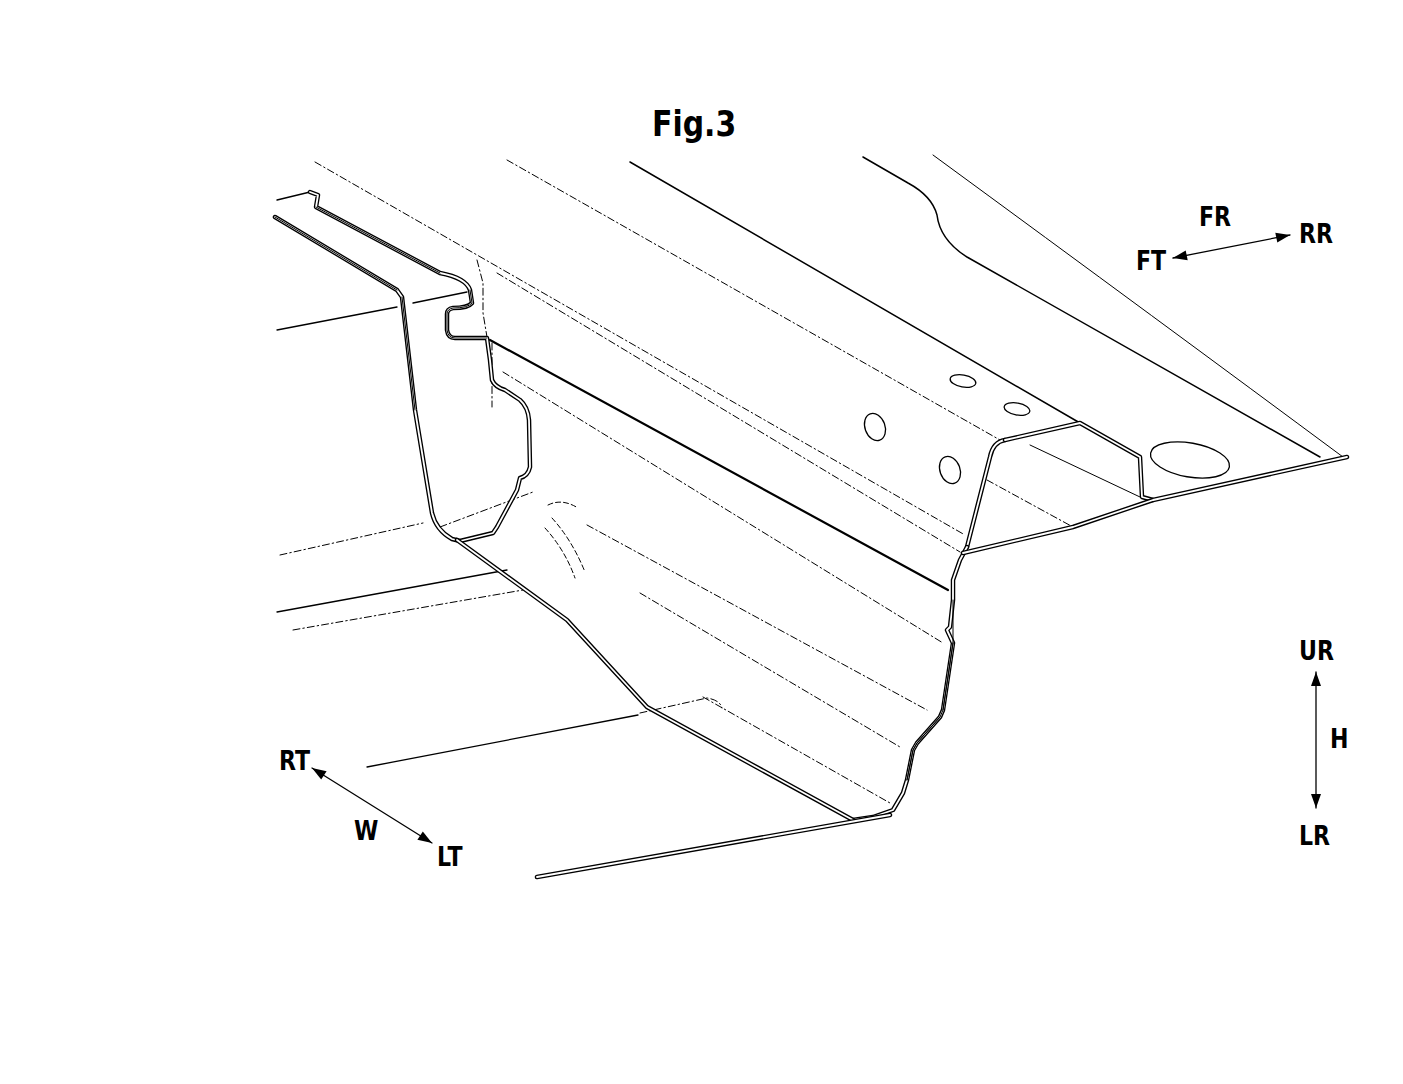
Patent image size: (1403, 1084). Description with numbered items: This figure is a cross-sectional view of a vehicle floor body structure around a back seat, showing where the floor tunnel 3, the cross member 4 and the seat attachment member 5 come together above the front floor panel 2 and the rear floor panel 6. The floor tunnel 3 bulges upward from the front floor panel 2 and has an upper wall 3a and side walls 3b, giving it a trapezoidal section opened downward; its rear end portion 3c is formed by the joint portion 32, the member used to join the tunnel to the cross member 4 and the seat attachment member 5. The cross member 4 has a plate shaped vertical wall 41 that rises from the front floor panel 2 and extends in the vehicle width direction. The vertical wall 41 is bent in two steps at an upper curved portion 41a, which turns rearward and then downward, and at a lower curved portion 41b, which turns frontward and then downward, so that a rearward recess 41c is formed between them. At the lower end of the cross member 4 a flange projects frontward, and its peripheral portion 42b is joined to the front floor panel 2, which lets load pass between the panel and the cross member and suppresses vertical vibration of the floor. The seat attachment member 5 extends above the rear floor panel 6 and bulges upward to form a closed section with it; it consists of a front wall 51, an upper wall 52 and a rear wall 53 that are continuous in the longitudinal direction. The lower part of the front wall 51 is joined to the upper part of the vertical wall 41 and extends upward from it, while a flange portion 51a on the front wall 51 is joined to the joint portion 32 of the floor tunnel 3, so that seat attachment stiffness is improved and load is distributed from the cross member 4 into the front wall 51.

The front floor panel 2 is at (750, 817).
The floor tunnel 3 is at (389, 550).
The upper wall 3a is at (278, 270).
The side wall 3b is at (325, 517).
The rear end portion 3c is at (473, 443).
The joint portion 32 is at (410, 350).
The cross member 4 is at (970, 710).
The vertical wall 41 is at (960, 740).
The curved portion 41a is at (953, 640).
The curved portion 41b is at (920, 750).
The rearward recess 41c is at (953, 680).
The peripheral portion 42b is at (700, 733).
The seat attachment member 5 is at (837, 260).
The front wall 51 is at (1000, 457).
The flange portion 51a is at (397, 247).
The upper wall 52 is at (877, 313).
The rear wall 53 is at (1123, 443).
The rear floor panel 6 is at (1100, 523).